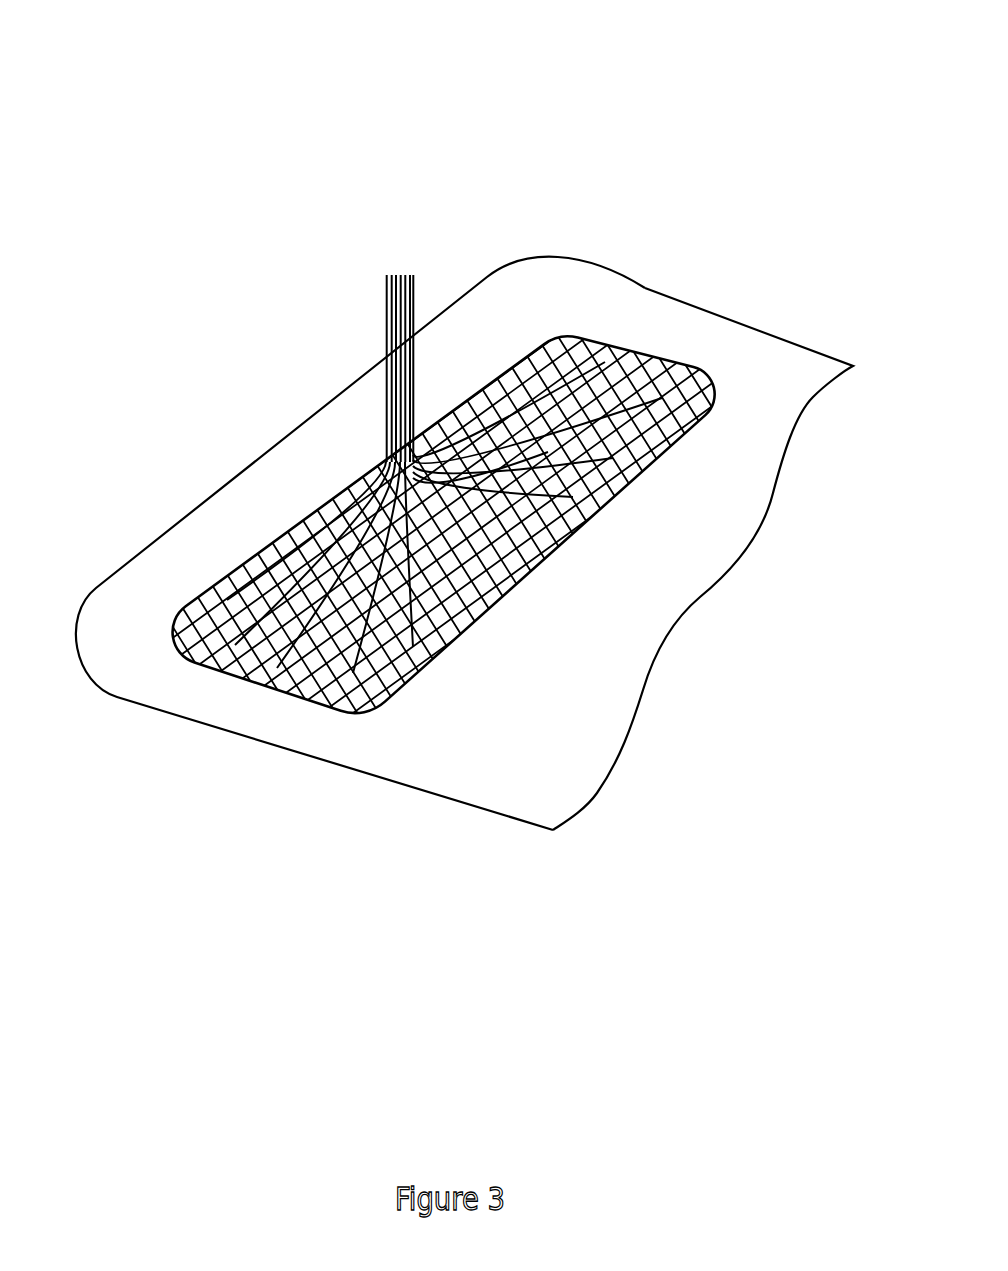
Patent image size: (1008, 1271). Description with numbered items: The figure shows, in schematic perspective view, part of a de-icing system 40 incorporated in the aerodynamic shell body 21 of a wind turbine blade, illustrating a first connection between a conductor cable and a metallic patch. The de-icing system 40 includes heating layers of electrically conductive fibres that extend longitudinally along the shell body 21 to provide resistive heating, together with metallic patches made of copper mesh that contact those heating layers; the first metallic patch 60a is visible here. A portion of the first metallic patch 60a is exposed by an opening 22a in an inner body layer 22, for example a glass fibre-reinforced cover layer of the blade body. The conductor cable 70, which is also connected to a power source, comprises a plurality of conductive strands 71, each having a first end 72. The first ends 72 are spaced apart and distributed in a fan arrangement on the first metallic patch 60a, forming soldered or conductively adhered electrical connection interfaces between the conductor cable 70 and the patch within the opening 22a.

The de-icing system 40 is at (522, 205).
The aerodynamic shell body 21 is at (193, 578).
The inner body layer 22 is at (797, 373).
The opening 22a is at (678, 367).
The first metallic patch 60a is at (560, 347).
The conductor cable 70 is at (386, 298).
The conductive strands 71 is at (386, 361).
The first ends 72 is at (613, 480).